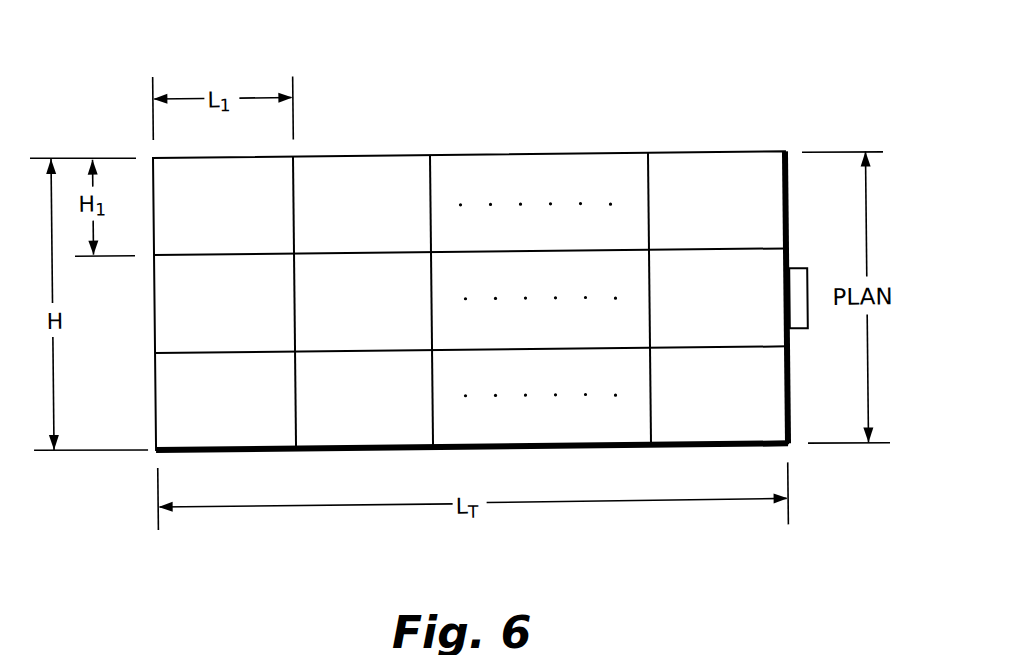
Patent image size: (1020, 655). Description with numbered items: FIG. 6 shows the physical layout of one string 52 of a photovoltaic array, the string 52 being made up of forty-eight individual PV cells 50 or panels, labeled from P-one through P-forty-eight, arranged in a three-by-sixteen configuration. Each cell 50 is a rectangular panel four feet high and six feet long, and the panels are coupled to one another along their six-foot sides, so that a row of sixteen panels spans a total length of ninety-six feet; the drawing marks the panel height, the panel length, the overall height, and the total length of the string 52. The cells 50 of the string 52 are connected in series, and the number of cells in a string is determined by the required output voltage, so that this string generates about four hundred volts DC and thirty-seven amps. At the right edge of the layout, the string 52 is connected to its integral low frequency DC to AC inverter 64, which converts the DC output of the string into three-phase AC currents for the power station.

The PV cell 50 is at (170, 168).
The string 52 is at (472, 229).
The DC to AC inverter 64 is at (806, 275).